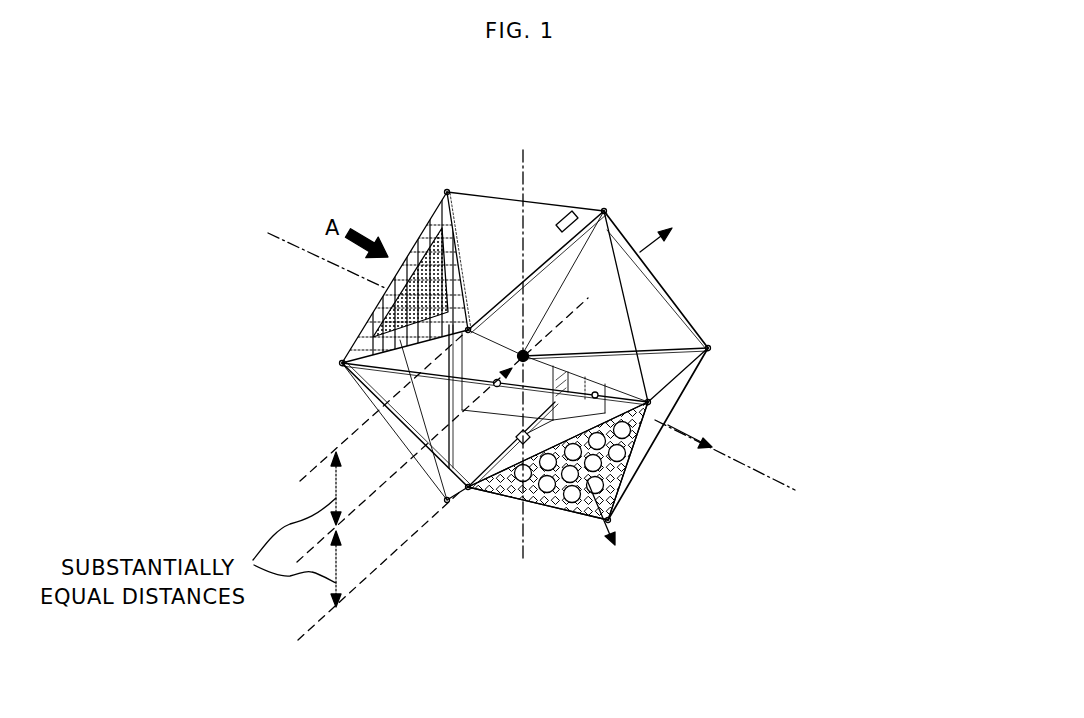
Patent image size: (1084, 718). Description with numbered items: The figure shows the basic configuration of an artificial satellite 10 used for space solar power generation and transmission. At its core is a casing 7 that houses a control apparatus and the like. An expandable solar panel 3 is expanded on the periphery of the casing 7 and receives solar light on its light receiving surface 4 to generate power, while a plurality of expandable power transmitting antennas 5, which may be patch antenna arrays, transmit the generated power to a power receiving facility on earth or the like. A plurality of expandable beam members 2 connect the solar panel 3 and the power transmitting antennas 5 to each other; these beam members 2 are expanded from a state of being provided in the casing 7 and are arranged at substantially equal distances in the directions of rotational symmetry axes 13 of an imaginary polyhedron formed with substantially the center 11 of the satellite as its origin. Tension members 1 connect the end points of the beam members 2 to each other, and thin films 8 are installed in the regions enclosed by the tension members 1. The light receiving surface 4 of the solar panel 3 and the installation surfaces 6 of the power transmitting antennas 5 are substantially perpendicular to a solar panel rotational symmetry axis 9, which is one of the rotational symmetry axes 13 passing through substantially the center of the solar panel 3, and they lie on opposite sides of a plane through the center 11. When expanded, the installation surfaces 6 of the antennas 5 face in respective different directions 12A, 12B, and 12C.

The tension members 1 is at (412, 253).
The expandable beam members 2 is at (566, 225).
The expandable solar panel 3 is at (352, 343).
The light receiving surface 4 is at (378, 313).
The expandable power transmitting antennas 5 is at (572, 492).
The installation surfaces 6 is at (502, 490).
The casing 7 is at (478, 388).
The thin films 8 is at (653, 281).
The solar panel rotational symmetry axis 9 is at (745, 467).
The artificial satellite 10 is at (657, 200).
The center 11 is at (633, 318).
The direction of installation surface of power transmitting antenna 12A is at (618, 531).
The direction of installation surface of power transmitting antenna 12B is at (668, 425).
The direction of installation surface of power transmitting antenna 12C is at (655, 244).
The rotational symmetry axes 13 is at (523, 157).